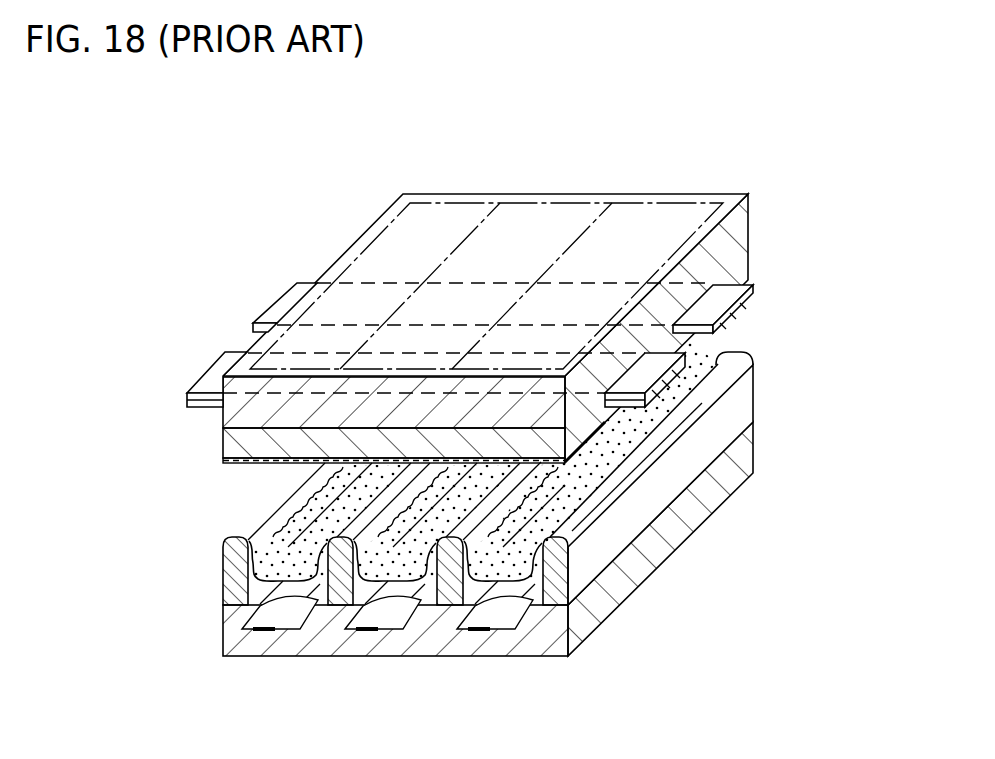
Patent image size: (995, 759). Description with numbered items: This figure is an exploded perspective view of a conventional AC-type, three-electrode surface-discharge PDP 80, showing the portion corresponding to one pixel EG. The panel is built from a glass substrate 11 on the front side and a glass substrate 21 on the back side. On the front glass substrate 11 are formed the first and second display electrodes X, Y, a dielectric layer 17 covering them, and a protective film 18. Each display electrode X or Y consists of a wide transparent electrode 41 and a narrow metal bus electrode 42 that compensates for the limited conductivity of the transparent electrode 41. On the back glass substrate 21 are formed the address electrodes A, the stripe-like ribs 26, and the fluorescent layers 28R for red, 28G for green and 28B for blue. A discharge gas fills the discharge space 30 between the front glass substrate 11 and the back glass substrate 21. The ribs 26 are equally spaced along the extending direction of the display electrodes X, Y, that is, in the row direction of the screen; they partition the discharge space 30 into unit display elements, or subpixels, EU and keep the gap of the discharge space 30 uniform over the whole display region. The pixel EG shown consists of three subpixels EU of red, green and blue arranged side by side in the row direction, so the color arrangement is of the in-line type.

The PDP 80 is at (337, 209).
The glass substrate 11 is at (737, 236).
The dielectric layer 17 is at (235, 448).
The protective film 18 is at (250, 465).
The glass substrate 21 is at (622, 587).
The rib 26 is at (648, 490).
The fluorescent layer 28R is at (327, 592).
The fluorescent layer 28G is at (432, 592).
The fluorescent layer 28B is at (535, 592).
The discharge space 30 is at (280, 532).
The transparent electrode 41 is at (707, 315).
The bus electrode 42 is at (750, 297).
The address electrode A is at (260, 633).
The first display electrode X is at (268, 297).
The second display electrode Y is at (218, 348).
The unit display element EU is at (582, 155).
The pixel EG is at (688, 142).